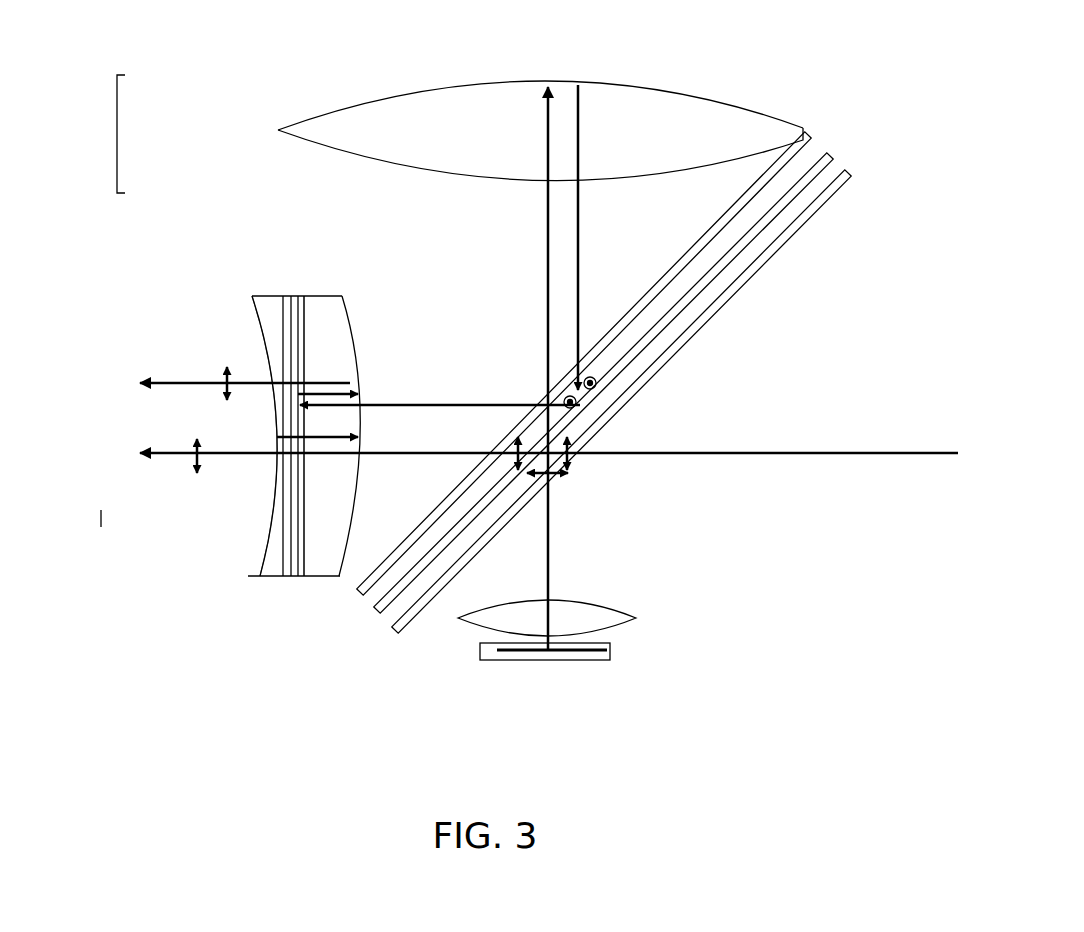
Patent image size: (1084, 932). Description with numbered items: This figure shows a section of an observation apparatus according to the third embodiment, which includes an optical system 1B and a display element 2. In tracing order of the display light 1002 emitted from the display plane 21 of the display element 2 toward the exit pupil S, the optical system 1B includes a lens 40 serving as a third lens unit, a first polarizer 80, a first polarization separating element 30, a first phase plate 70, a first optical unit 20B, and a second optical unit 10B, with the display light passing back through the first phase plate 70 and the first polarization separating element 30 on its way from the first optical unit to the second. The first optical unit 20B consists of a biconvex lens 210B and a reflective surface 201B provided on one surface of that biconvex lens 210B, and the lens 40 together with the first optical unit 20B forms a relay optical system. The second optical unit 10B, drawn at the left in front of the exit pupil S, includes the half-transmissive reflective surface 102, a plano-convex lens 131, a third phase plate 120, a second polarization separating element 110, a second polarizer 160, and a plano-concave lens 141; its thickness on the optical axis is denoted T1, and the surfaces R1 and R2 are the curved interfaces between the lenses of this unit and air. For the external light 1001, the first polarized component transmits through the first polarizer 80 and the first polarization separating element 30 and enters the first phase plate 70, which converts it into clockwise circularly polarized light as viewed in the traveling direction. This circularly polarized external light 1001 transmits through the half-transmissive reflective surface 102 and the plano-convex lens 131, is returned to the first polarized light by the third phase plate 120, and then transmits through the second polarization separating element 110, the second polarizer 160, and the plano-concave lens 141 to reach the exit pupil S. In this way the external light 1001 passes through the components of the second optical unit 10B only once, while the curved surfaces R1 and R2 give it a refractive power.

The optical system 1B is at (125, 67).
The first optical unit 20B is at (117, 134).
The reflective surface 201B is at (300, 117).
The biconvex lens 210B is at (303, 131).
The second optical unit 10B is at (200, 265).
The half-transmissive reflective surface 102 is at (343, 313).
The curved surface R1 is at (353, 347).
The curved surface R2 is at (260, 332).
The thickness of the second optical unit T1 is at (428, 415).
The plano-concave lens 141 is at (265, 552).
The second polarizer 160 is at (283, 563).
The second polarization separating element 110 is at (287, 573).
The third phase plate 120 is at (300, 577).
The plano-convex lens 131 is at (332, 563).
The first polarization separating element 30 is at (817, 175).
The first phase plate 70 is at (374, 607).
The first polarizer 80 is at (413, 613).
The external light 1001 is at (862, 452).
The display light 1002 is at (550, 577).
The lens 40 is at (593, 617).
The display plane 21 is at (610, 647).
The display element 2 is at (518, 658).
The exit pupil S is at (102, 362).